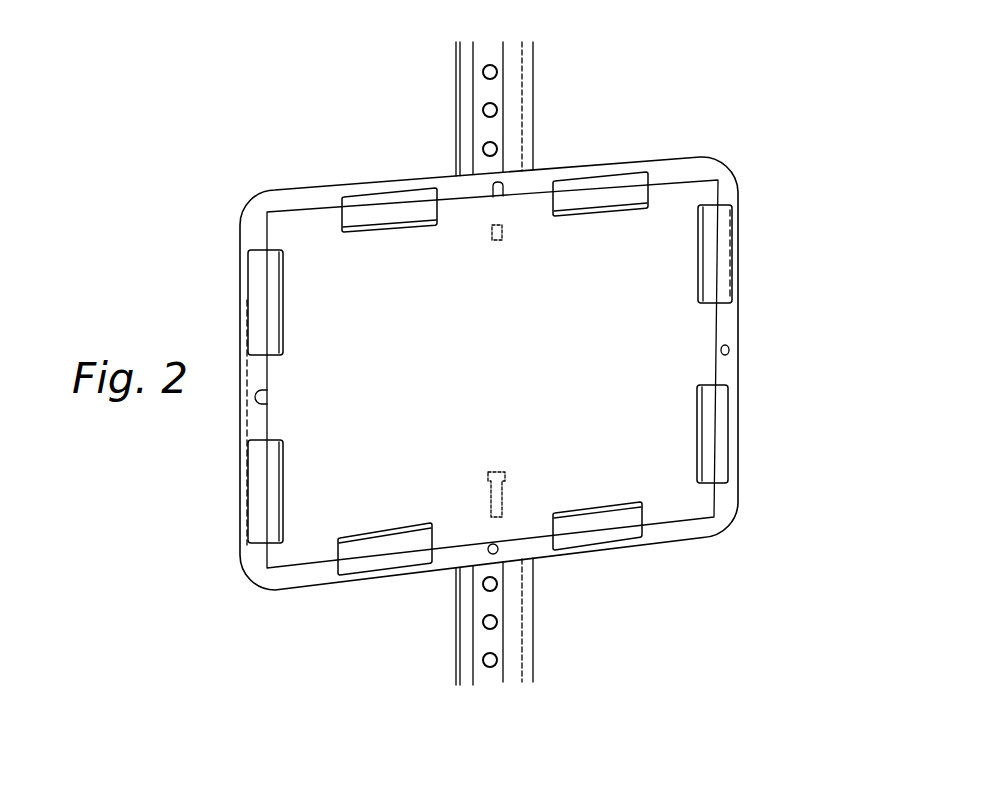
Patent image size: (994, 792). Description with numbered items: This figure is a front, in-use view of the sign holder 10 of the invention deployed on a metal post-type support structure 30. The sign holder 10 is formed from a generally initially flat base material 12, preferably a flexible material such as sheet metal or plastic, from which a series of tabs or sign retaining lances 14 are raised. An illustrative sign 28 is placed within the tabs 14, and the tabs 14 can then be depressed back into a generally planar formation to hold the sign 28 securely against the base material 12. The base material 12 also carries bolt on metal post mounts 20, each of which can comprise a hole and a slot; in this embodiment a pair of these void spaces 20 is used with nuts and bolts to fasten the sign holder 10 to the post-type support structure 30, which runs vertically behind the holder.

The sign holder 10 is at (215, 227).
The base material 12 is at (688, 168).
The sign retaining lances 14 is at (379, 207).
The bolt on metal post mounts 20 is at (502, 232).
The sign 28 is at (690, 326).
The metal post-type support structure 30 is at (530, 623).